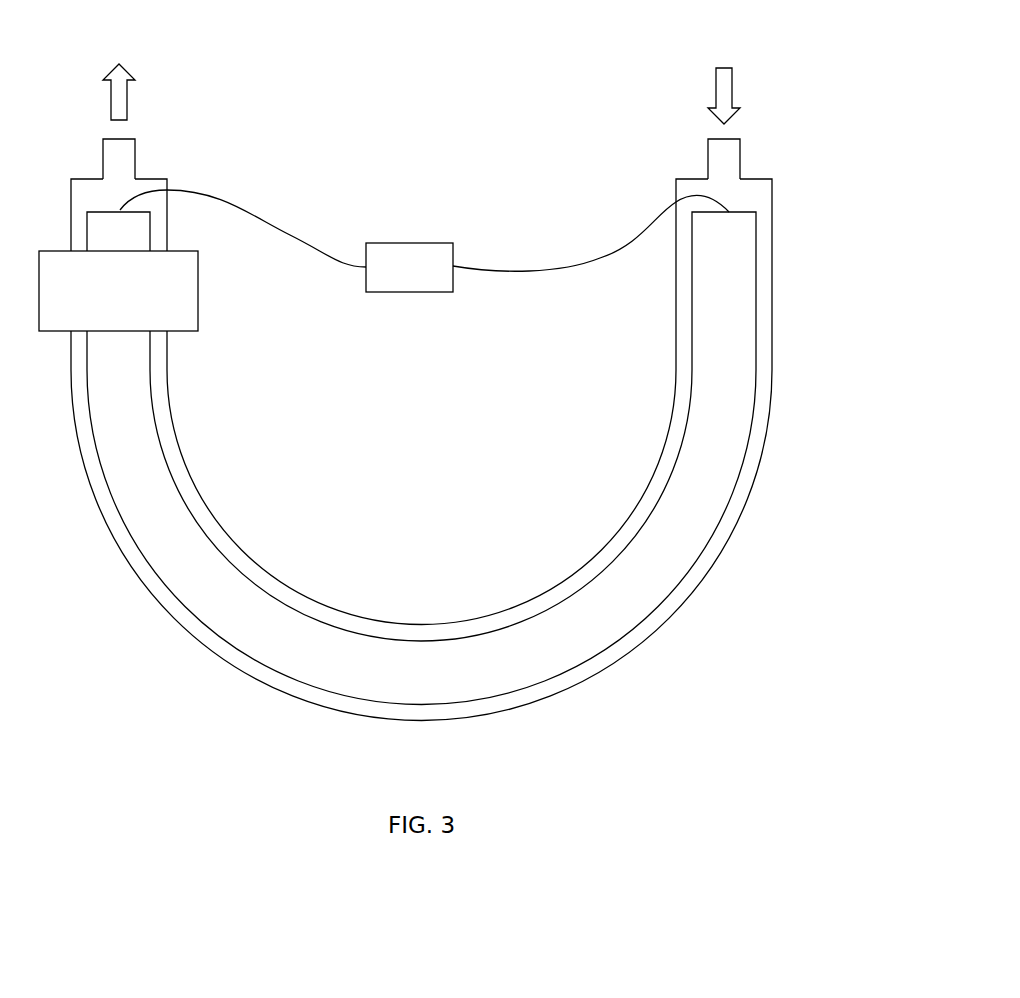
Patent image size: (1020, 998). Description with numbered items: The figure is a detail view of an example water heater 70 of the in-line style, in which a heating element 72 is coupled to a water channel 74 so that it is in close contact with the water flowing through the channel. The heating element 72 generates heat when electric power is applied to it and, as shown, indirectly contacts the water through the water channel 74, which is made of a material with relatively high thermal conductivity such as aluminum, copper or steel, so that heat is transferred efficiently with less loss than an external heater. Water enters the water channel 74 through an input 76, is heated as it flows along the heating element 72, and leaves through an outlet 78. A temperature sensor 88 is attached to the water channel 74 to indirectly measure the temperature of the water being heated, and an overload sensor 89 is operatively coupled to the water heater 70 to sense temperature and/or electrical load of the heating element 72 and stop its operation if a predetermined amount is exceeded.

The water heater 70 is at (438, 148).
The heating element 72 is at (723, 300).
The water channel 74 is at (763, 401).
The input 76 is at (724, 156).
The outlet 78 is at (118, 156).
The temperature sensor 88 is at (174, 307).
The overload sensor 89 is at (408, 275).